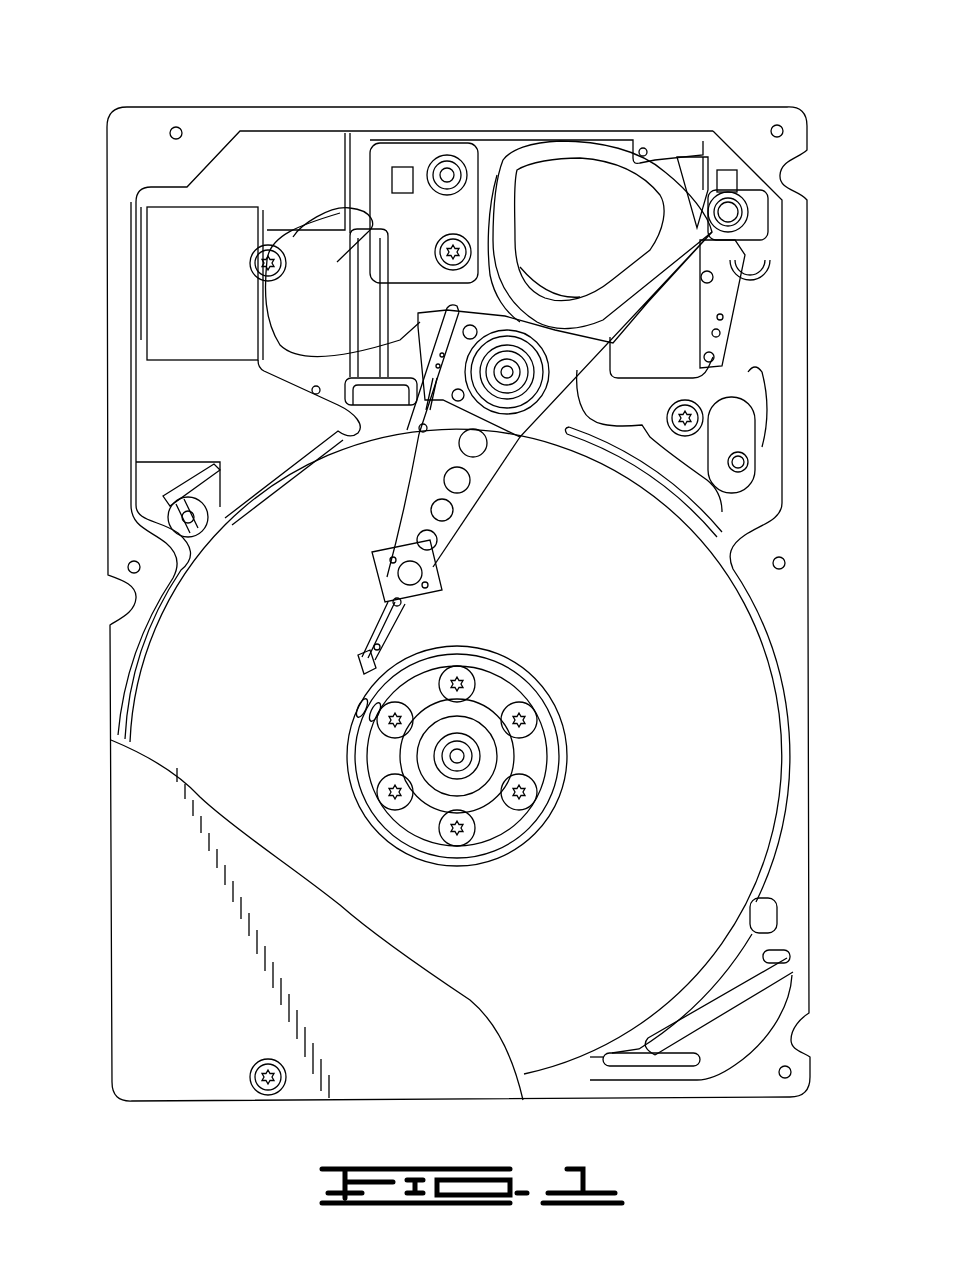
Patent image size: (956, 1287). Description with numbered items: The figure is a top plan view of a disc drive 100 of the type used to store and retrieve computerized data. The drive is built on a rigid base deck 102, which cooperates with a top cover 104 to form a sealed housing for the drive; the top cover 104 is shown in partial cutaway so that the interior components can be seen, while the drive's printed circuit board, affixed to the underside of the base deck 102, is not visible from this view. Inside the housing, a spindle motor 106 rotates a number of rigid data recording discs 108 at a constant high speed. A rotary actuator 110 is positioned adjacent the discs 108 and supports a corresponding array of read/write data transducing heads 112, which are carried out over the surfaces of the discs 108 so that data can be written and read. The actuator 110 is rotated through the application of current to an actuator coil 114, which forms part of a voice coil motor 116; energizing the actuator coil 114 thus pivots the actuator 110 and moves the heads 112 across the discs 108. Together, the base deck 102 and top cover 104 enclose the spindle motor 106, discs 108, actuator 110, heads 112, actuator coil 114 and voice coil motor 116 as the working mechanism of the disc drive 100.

The disc drive 100 is at (176, 79).
The base deck 102 is at (283, 367).
The top cover 104 is at (138, 797).
The spindle motor 106 is at (477, 728).
The discs 108 is at (720, 745).
The rotary actuator 110 is at (514, 435).
The read/write data transducing heads 112 is at (362, 660).
The actuator coil 114 is at (568, 168).
The voice coil motor 116 is at (612, 152).